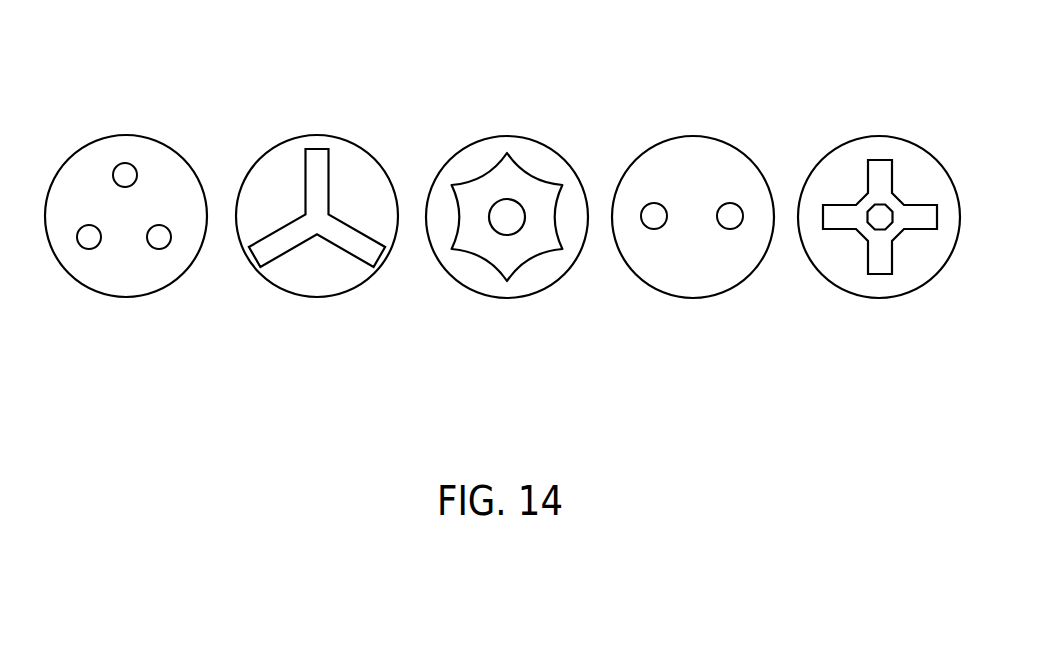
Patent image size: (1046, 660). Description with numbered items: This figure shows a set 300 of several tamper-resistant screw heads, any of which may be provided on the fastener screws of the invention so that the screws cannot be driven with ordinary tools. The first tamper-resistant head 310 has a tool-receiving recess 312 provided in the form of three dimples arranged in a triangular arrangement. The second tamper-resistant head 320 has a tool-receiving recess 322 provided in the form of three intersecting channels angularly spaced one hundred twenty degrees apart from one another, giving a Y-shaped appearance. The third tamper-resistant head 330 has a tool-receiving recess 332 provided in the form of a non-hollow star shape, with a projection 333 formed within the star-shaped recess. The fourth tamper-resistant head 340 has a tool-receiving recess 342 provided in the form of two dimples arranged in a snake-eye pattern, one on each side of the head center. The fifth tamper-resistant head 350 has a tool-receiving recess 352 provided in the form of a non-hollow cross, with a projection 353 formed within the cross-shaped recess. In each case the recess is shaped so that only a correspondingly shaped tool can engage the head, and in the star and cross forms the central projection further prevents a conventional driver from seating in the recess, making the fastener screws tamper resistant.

The set of pilot head configurations 300 is at (153, 47).
The tamper-resistant head 310 is at (120, 110).
The tool-receiving recess 312 is at (137, 172).
The tamper-resistant head 320 is at (311, 111).
The tool-receiving recess 322 is at (330, 170).
The tamper-resistant head 330 is at (496, 111).
The tool-receiving recess 332 is at (537, 185).
The projection 333 is at (520, 230).
The tamper-resistant head 340 is at (681, 111).
The tool-receiving recess 342 is at (727, 203).
The tamper-resistant head 350 is at (861, 111).
The tool-receiving recess 352 is at (892, 170).
The projection 353 is at (888, 227).